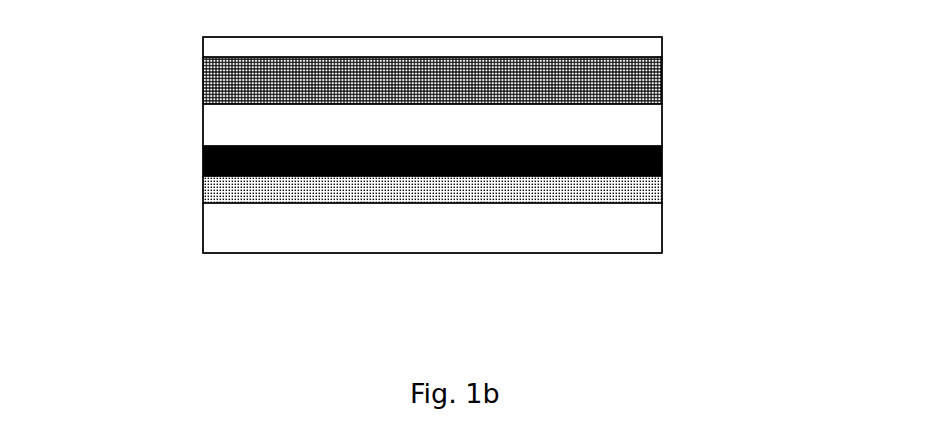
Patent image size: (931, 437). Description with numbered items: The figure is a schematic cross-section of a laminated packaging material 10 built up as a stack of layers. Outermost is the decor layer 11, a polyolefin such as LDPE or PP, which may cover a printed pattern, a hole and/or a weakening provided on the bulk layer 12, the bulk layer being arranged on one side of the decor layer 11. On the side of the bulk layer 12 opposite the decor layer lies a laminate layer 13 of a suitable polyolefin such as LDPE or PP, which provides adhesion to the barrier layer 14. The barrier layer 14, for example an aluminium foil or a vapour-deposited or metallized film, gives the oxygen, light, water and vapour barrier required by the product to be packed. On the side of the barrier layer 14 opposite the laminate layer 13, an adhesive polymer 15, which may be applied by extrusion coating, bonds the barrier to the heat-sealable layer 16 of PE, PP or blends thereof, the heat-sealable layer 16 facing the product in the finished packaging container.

The packaging material 10 is at (353, 145).
The decor layer 11 is at (662, 45).
The bulk layer 12 is at (662, 87).
The laminate layer 13 is at (662, 125).
The barrier layer 14 is at (662, 160).
The adhesive polymer 15 is at (662, 195).
The heat-sealable layer 16 is at (662, 237).